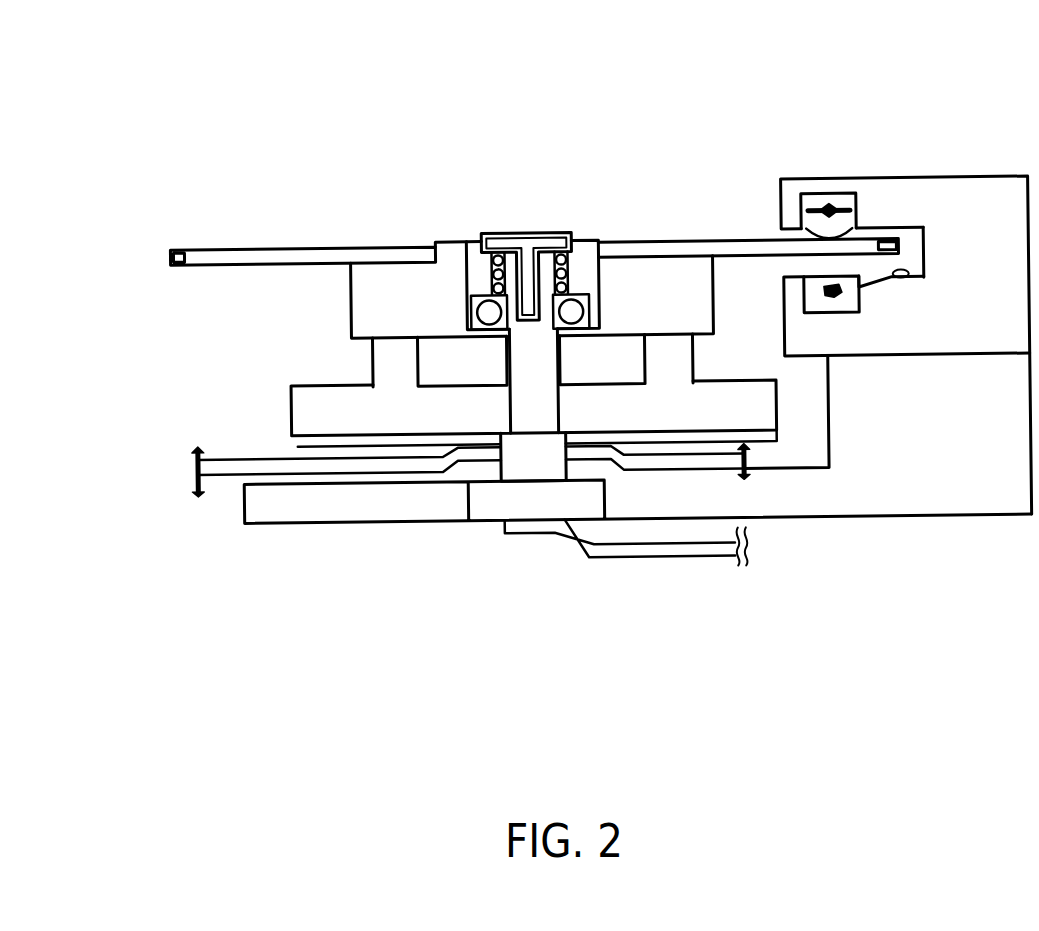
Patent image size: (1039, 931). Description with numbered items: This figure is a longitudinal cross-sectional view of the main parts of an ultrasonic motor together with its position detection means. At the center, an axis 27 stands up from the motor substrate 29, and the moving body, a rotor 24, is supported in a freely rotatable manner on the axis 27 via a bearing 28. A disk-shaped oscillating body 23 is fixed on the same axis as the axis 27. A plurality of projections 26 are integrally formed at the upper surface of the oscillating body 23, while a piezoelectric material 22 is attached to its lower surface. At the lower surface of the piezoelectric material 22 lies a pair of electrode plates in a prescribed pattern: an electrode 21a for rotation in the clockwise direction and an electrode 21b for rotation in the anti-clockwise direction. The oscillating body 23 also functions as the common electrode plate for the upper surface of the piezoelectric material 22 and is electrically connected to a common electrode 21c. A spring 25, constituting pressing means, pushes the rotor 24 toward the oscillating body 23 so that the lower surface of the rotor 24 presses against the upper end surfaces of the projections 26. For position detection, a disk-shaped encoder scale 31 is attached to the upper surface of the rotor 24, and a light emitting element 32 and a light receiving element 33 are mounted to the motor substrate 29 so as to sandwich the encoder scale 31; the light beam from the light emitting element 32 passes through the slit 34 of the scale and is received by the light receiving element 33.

The electrode for rotation in a clockwise direction 21a is at (233, 481).
The electrode for rotation in an anti-clockwise direction 21b is at (707, 463).
The common electrode 21c is at (670, 548).
The piezoelectric material 22 is at (297, 448).
The disk-shaped oscillating body 23 is at (303, 405).
The rotor 24 is at (387, 252).
The spring 25 is at (472, 257).
The projections 26 is at (387, 367).
The axis 27 is at (532, 470).
The bearing 28 is at (582, 242).
The motor substrate 29 is at (307, 513).
The disk-shaped encoder scale 31 is at (680, 242).
The light emitting element 32 is at (860, 180).
The light receiving element 33 is at (928, 279).
The slit 34 is at (800, 238).